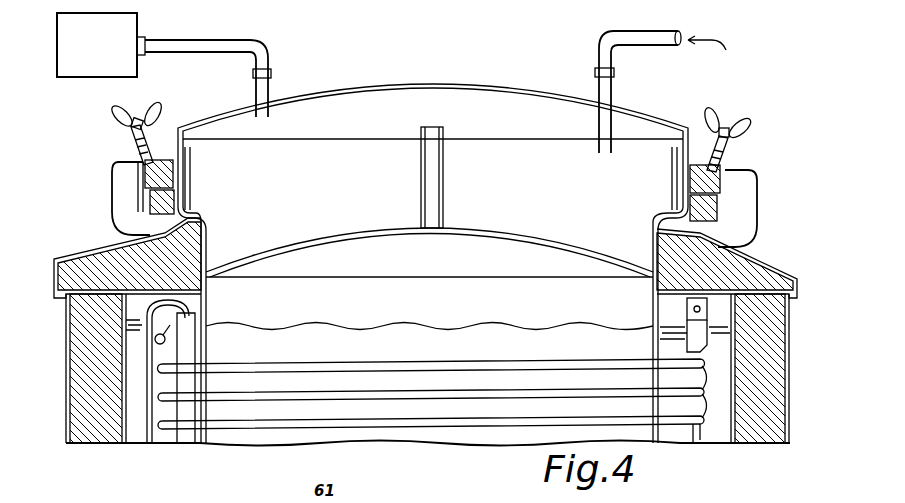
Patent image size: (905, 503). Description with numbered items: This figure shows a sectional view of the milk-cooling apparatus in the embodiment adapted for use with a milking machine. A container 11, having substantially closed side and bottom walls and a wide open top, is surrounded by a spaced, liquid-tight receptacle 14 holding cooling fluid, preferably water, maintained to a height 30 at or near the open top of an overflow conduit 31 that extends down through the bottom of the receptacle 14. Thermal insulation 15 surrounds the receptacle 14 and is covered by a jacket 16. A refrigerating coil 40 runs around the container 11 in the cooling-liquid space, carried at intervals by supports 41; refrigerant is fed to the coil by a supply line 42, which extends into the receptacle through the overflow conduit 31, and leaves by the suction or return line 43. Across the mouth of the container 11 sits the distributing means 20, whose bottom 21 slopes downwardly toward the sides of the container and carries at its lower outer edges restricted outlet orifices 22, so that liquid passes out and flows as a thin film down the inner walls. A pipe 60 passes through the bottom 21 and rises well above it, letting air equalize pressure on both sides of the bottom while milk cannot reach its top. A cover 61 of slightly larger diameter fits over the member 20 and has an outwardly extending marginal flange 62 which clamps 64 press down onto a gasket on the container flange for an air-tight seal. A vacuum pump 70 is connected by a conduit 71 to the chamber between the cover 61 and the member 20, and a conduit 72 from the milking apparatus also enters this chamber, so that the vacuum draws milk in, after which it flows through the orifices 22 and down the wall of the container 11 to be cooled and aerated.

The vacuum pump 70 is at (138, 23).
The conduit 71 is at (245, 45).
The conduit from milking apparatus 72 is at (637, 30).
The cover 61 is at (392, 87).
The pipe 60 is at (443, 183).
The distributing means 20 is at (189, 193).
The bottom 21 is at (327, 240).
The outlet orifices 22 is at (217, 268).
The clamps 64 is at (125, 181).
The marginal flange 62 is at (148, 203).
The thermal insulation 15 is at (760, 260).
The jacket 16 is at (68, 373).
The receptacle 14 is at (123, 443).
The container 11 is at (208, 304).
The suction or return line 43 is at (190, 307).
The refrigerant supply line 42 is at (140, 443).
The overflow conduit 31 is at (195, 353).
The height of cooling liquid 30 is at (135, 320).
The refrigerating coil 40 is at (465, 362).
The supports 41 is at (688, 433).